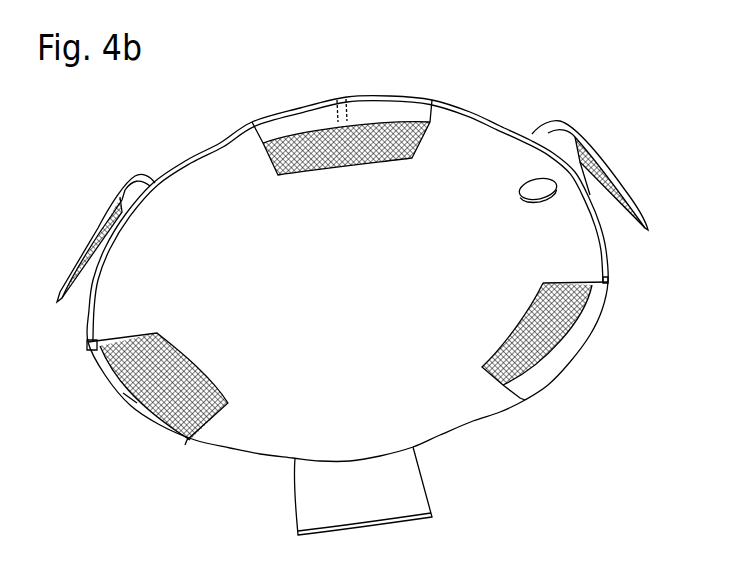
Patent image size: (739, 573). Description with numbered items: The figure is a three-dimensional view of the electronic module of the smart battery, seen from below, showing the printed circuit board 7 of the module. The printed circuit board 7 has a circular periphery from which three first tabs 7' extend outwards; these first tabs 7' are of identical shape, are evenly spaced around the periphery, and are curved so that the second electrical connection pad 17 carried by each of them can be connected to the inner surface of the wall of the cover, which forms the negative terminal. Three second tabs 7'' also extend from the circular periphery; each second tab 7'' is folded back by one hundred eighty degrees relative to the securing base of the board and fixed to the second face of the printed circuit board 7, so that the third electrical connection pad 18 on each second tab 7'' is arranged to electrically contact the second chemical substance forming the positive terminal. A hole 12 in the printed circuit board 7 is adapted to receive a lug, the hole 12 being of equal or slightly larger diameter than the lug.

The printed circuit board 7 is at (347, 315).
The first tab 7' is at (590, 167).
The second tab 7'' is at (568, 362).
The hole 12 is at (528, 180).
The second electrical connection pad 17 is at (592, 197).
The third electrical connection pad 18 is at (530, 358).